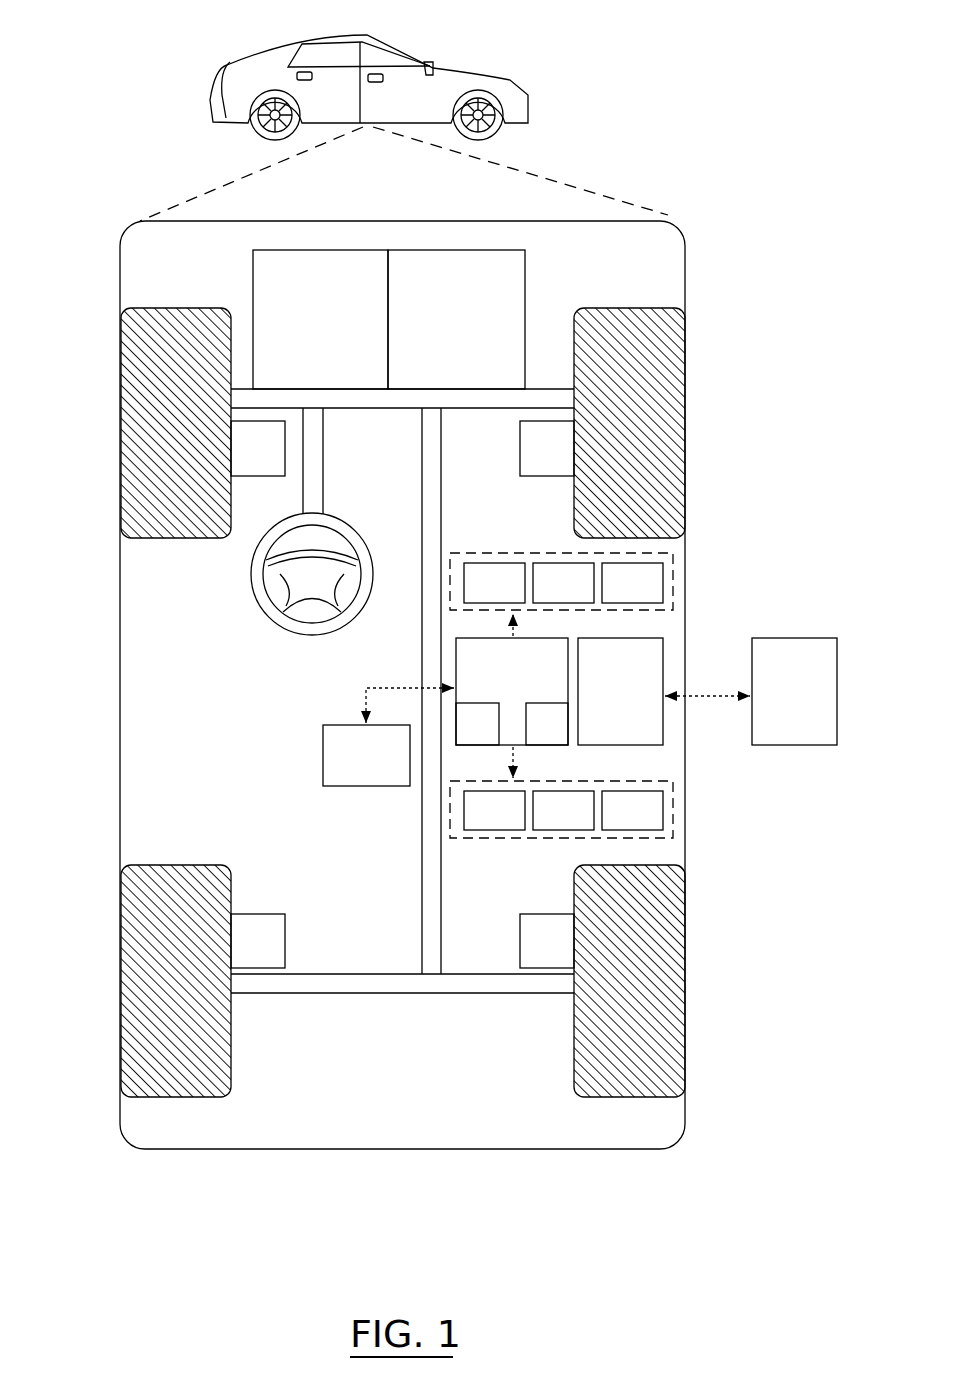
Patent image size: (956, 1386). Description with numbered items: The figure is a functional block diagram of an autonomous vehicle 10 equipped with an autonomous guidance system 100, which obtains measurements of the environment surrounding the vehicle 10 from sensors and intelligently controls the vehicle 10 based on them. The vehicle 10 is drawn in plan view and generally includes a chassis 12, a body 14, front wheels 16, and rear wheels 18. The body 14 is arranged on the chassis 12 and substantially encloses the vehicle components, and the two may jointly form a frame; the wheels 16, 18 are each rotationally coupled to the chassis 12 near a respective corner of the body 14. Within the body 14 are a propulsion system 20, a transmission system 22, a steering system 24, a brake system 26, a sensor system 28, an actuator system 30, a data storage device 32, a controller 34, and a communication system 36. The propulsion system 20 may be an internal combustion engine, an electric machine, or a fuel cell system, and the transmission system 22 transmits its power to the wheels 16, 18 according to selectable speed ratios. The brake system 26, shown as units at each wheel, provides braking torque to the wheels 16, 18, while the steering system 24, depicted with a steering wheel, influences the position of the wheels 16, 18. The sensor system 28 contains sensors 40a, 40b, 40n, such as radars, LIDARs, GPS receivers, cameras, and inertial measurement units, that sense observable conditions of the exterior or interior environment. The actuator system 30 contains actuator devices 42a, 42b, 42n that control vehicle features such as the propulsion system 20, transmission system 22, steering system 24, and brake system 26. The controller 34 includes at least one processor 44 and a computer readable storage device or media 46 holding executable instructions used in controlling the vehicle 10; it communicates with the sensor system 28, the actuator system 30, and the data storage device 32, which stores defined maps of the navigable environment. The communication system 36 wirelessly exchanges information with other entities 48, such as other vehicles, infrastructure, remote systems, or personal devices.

The vehicle 10 is at (215, 90).
The autonomous guidance system 100 is at (634, 187).
The chassis 12 is at (421, 900).
The body 14 is at (120, 780).
The front wheels 16 is at (160, 308).
The rear wheels 18 is at (186, 1097).
The propulsion system 20 is at (303, 336).
The transmission system 22 is at (439, 336).
The steering system 24 is at (332, 440).
The brake system 26 is at (241, 463).
The sensor system 28 is at (505, 553).
The actuator system 30 is at (500, 840).
The data storage device 32 is at (349, 773).
The controller 34 is at (495, 685).
The communication system 36 is at (603, 709).
The sensor 40a is at (469, 597).
The sensor 40b is at (538, 597).
The sensor 40n is at (607, 597).
The actuator device 42a is at (469, 825).
The actuator device 42b is at (538, 825).
The actuator device 42n is at (607, 825).
The processor 44 is at (461, 738).
The computer readable storage device or media 46 is at (531, 738).
The other entities 48 is at (777, 690).